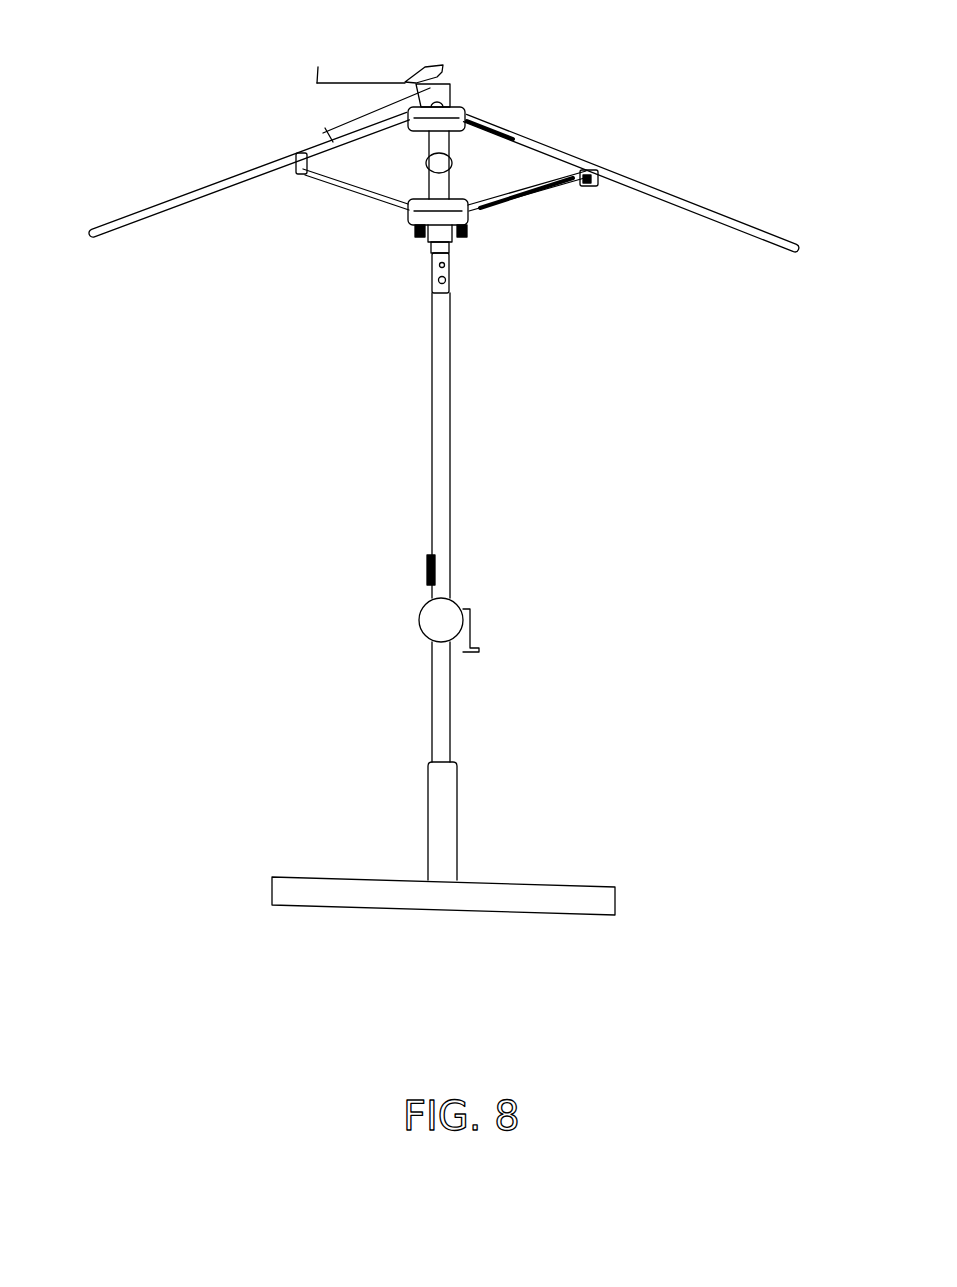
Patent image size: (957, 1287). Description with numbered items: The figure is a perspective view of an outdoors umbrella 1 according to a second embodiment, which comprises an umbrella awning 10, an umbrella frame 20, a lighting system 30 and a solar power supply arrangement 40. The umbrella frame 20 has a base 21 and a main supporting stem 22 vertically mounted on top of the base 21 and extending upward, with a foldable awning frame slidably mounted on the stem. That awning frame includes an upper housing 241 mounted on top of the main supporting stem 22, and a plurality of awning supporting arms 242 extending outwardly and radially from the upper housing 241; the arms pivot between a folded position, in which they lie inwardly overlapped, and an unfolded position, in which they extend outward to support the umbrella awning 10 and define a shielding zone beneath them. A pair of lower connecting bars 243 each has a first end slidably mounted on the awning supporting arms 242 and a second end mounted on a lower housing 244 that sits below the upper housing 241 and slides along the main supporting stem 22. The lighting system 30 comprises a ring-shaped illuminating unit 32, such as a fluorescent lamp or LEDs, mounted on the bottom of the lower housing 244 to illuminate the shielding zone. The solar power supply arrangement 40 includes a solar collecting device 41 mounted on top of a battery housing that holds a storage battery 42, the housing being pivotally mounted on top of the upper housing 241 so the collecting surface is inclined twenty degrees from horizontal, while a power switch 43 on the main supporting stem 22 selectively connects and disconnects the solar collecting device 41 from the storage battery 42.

The outdoors umbrella 1 is at (157, 855).
The umbrella awning 10 is at (688, 190).
The umbrella frame 20 is at (223, 535).
The base 21 is at (545, 898).
The main supporting stem 22 is at (442, 528).
The lighting system 30 is at (600, 257).
The illuminating unit 32 is at (410, 230).
The solar power supply arrangement 40 is at (532, 68).
The solar collecting device 41 is at (412, 75).
The storage battery 42 is at (437, 82).
The power switch 43 is at (427, 573).
The upper housing 241 is at (465, 112).
The awning supporting arms 242 is at (240, 175).
The lower connecting bars 243 is at (318, 183).
The lower housing 244 is at (470, 191).